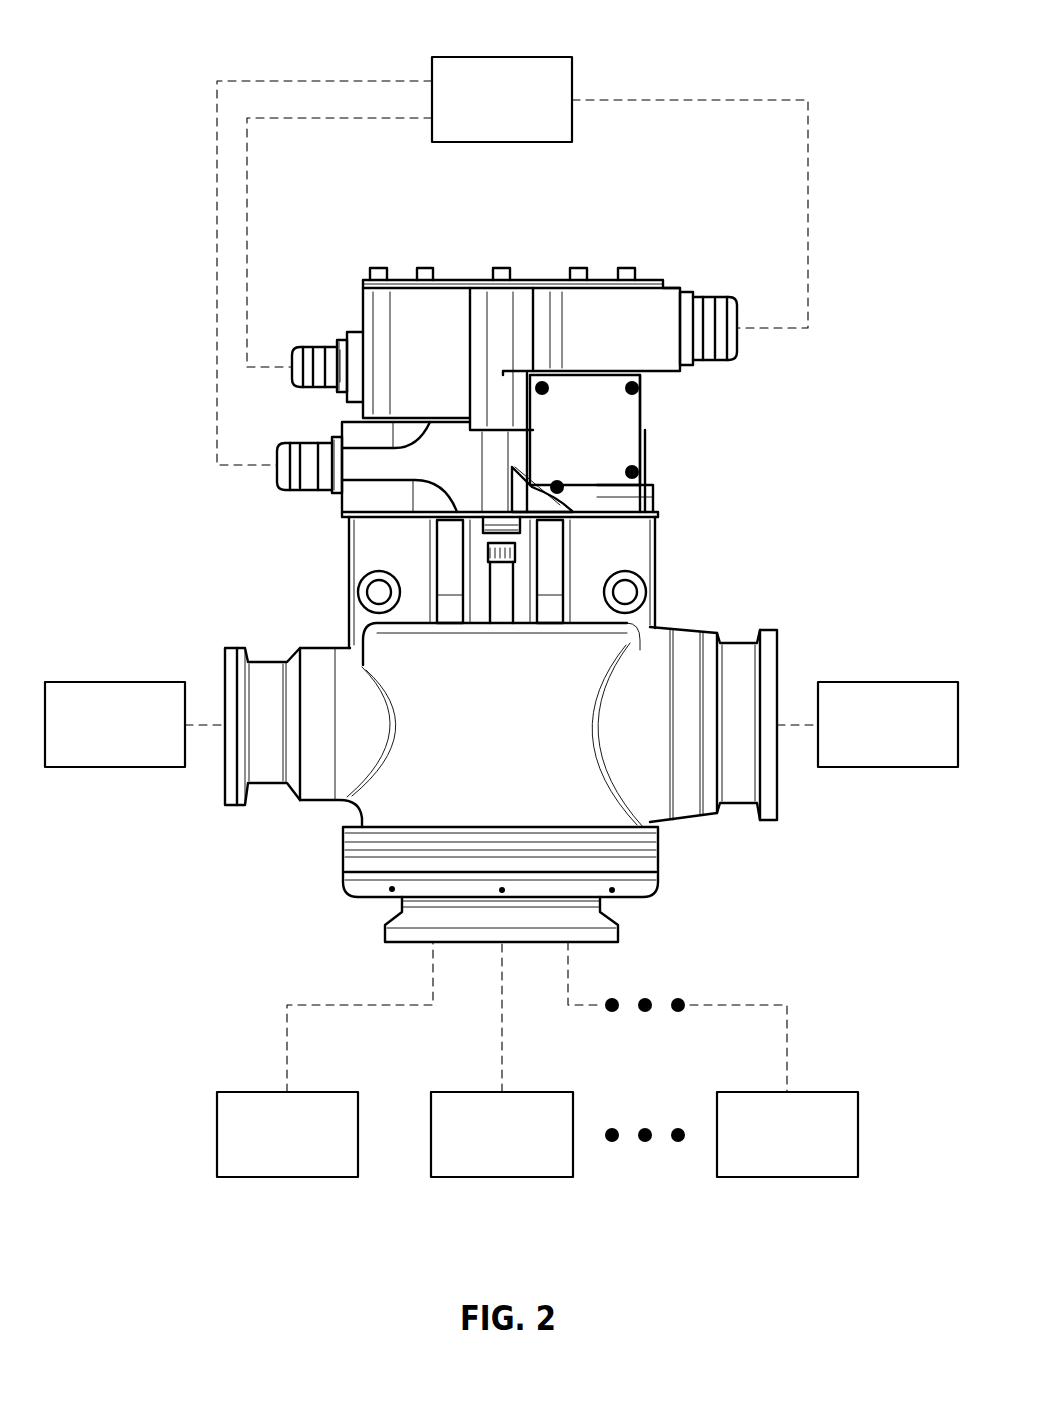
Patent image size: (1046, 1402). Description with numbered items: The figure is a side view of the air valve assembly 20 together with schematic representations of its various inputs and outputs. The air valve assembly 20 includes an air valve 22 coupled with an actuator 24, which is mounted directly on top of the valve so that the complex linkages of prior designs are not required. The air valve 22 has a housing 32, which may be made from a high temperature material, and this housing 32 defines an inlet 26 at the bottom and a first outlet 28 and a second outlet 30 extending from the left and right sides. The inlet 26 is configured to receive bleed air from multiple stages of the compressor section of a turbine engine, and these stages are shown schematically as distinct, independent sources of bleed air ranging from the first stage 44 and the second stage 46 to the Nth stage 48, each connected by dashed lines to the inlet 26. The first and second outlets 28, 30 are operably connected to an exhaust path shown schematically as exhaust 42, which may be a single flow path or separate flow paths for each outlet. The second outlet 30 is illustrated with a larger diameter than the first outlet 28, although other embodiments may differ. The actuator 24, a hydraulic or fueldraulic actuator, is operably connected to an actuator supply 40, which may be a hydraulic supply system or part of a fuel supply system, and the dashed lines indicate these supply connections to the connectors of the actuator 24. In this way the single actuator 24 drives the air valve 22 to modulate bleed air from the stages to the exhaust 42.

The air valve assembly 20 is at (860, 361).
The air valve 22 is at (175, 562).
The actuator 24 is at (125, 241).
The inlet 26 is at (618, 940).
The first outlet 28 is at (237, 645).
The second outlet 30 is at (766, 628).
The housing 32 is at (643, 826).
The actuator supply 40 is at (460, 57).
The exhaust 42 is at (142, 682).
The stage 1 44 is at (245, 1178).
The stage 2 46 is at (463, 1178).
The stage N 48 is at (823, 1178).